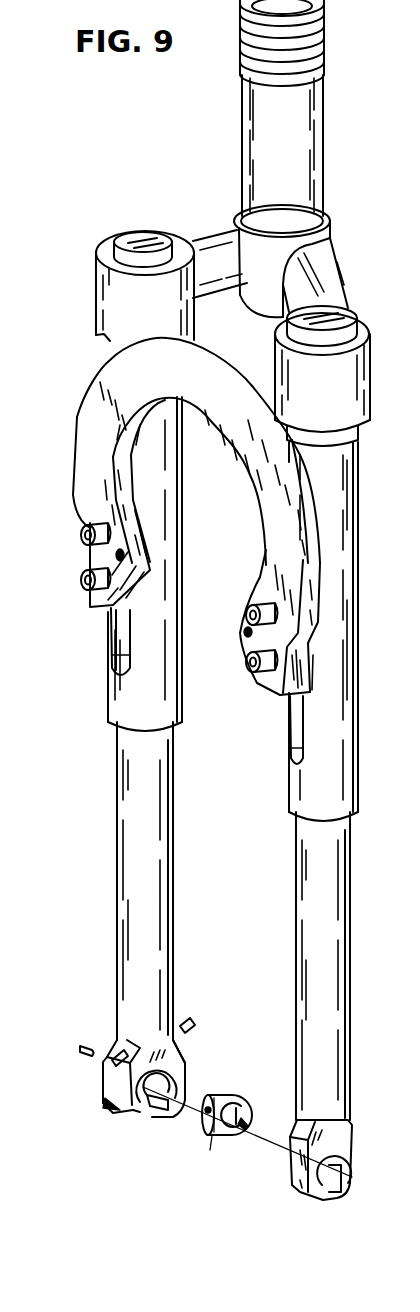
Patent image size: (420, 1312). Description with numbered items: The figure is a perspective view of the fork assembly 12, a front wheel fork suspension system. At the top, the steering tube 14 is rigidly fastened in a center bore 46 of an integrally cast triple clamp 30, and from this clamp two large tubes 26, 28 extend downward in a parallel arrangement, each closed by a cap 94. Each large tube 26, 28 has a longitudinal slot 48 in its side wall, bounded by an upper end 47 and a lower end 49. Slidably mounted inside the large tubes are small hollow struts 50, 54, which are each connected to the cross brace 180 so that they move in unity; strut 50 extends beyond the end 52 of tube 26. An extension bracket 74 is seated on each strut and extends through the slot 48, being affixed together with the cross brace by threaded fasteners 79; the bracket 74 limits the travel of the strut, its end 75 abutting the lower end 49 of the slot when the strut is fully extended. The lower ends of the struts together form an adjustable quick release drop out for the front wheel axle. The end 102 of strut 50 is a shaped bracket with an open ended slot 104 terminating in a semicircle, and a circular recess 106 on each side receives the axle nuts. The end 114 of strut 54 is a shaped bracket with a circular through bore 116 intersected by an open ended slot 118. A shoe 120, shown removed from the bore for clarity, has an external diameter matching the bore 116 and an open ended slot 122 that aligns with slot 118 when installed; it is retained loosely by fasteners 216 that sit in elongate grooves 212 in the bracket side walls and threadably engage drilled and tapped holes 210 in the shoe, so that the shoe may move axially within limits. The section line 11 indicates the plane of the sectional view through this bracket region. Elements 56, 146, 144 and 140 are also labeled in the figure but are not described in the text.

The fork assembly 12 is at (140, 182).
The steering tube 14 is at (313, 108).
The center bore 46 is at (322, 205).
The triple clamp 30 is at (336, 270).
The cap 94 is at (165, 236).
The large tube 26 is at (360, 480).
The large tube 28 is at (172, 512).
The cross brace 180 is at (190, 400).
The upper end of slot 47 is at (310, 525).
The threaded fasteners 79 is at (80, 584).
The longitudinal slot 48 is at (125, 640).
The lower end of slot 49 is at (120, 665).
The left upper tube 56 is at (108, 700).
The extension bracket 74 is at (310, 665).
The end of bracket 75 is at (313, 703).
The end of tube 52 is at (358, 800).
The strut 54 is at (118, 916).
The strut 50 is at (350, 1010).
The section line 11 is at (96, 967).
The fasteners 216 is at (80, 1048).
The elongate grooves 212 is at (118, 1054).
The end of strut / bracket 114 is at (186, 1055).
The circular through bore 116 is at (143, 1087).
The open ended slot 118 is at (150, 1118).
The hub spacer 146 is at (210, 1100).
The shoe 120 is at (240, 1096).
The axle end 144 is at (250, 1110).
The open ended slot 122 is at (236, 1130).
The drilled and tapped holes 210 is at (210, 1140).
The end of strut / bracket 102 is at (352, 1135).
The circular recess 106 is at (338, 1165).
The open ended slot 104 is at (335, 1195).
The hub 140 is at (418, 1090).